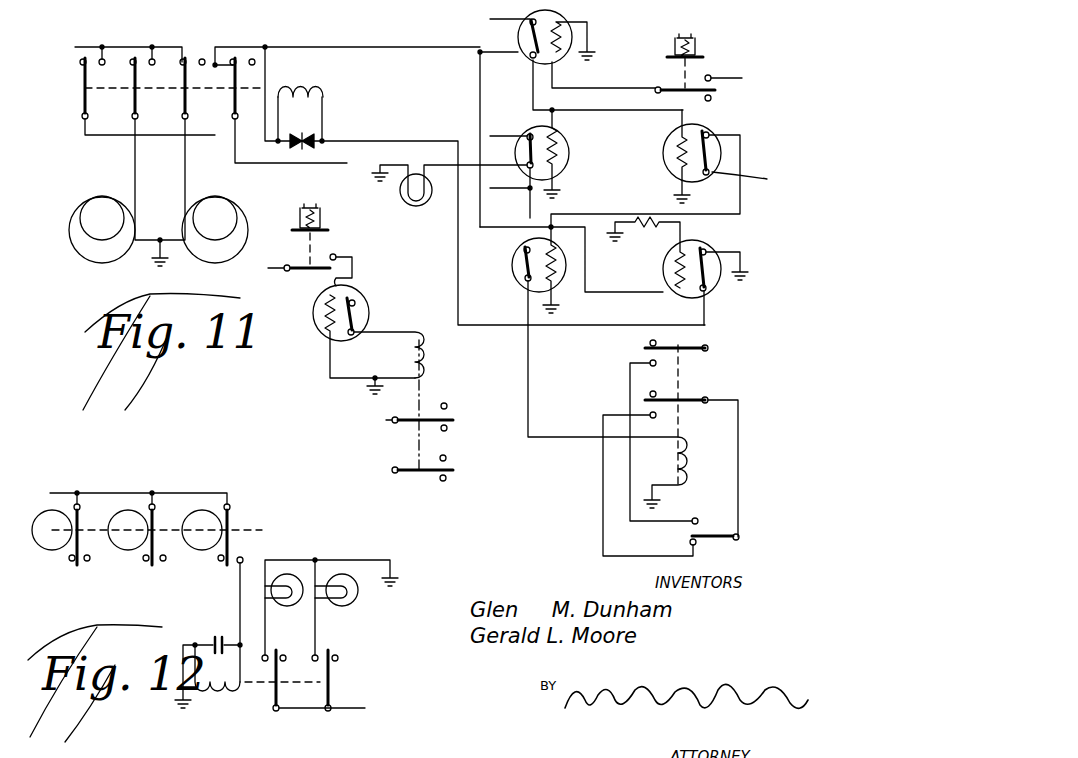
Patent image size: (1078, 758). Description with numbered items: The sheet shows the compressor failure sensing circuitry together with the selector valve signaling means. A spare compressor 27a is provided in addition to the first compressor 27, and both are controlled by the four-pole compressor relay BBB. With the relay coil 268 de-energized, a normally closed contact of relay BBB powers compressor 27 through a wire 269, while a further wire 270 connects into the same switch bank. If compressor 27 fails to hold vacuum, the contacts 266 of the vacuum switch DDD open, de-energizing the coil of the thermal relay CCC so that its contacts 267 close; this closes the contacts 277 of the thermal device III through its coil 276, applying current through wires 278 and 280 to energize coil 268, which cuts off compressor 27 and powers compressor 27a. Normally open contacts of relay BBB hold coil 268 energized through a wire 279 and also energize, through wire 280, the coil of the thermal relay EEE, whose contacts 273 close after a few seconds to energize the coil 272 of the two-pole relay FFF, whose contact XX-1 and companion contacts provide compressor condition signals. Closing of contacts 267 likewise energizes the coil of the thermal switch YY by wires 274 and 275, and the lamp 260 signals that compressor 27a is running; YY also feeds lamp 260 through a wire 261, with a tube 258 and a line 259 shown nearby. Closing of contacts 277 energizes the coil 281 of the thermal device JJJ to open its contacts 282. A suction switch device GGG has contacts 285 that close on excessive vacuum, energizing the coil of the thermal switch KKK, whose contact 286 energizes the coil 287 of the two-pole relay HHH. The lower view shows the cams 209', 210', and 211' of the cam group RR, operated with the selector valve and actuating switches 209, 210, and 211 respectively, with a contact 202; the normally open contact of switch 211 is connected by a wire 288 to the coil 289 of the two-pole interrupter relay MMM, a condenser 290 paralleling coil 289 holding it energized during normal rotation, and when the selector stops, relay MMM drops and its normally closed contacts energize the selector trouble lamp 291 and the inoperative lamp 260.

In FIG. 11, the compressor relay BBB is at (182, 44).
In FIG. 11, the wire 279 is at (83, 127).
In FIG. 11, the wire 269 is at (185, 178).
In FIG. 11, the line 270 is at (236, 164).
In FIG. 11, the relay coil 268 is at (296, 88).
In FIG. 11, the first compressor 27 is at (246, 220).
In FIG. 11, the spare compressor 27a is at (75, 252).
In FIG. 11, the suction switch device GGG is at (312, 208).
In FIG. 11, the contacts 285 is at (354, 262).
In FIG. 11, the thermal switch KKK is at (360, 293).
In FIG. 11, the relay contact 286 is at (358, 318).
In FIG. 11, the coil 287 is at (430, 358).
In FIG. 11, the two-pole relay HHH is at (463, 440).
In FIG. 11, the tube 258 is at (443, 174).
In FIG. 11, the inoperative indicator lamp 260 is at (408, 204).
In FIG. 12, the inoperative indicator lamp 260 is at (352, 600).
In FIG. 11, the thermal relay CCC is at (549, 13).
In FIG. 11, the contacts 267 is at (525, 40).
In FIG. 11, the wire 274 is at (533, 97).
In FIG. 11, the wire 280 is at (480, 114).
In FIG. 11, the wire 275 is at (556, 118).
In FIG. 11, the vacuum switch DDD is at (700, 40).
In FIG. 11, the contacts 266 is at (675, 83).
In FIG. 11, the thermal switch YY is at (570, 146).
In FIG. 11, the wire 261 is at (511, 201).
In FIG. 11, the line 259 is at (535, 213).
In FIG. 11, the thermal device III is at (711, 122).
In FIG. 11, the contacts 277 is at (712, 152).
In FIG. 11, the coil 276 is at (668, 152).
In FIG. 11, the wire 278 is at (742, 204).
In FIG. 11, the thermal relay EEE is at (522, 288).
In FIG. 11, the contacts 273 is at (522, 262).
In FIG. 11, the thermal device JJJ is at (716, 290).
In FIG. 11, the coil 281 is at (665, 268).
In FIG. 11, the contacts 282 is at (718, 270).
In FIG. 11, the two-pole relay FFF is at (748, 411).
In FIG. 11, the switch contact XX-1 is at (716, 559).
In FIG. 11, the coil 272 is at (686, 460).
In FIG. 12, the switch bank RR is at (139, 492).
In FIG. 12, the cam 209' is at (52, 496).
In FIG. 12, the cam 210' is at (112, 506).
In FIG. 12, the cam 211' is at (202, 504).
In FIG. 12, the cam switch 209 is at (59, 549).
In FIG. 12, the switch 210 is at (135, 549).
In FIG. 12, the switch 211 is at (205, 548).
In FIG. 12, the contact 202 is at (247, 534).
In FIG. 12, the wire 288 is at (238, 607).
In FIG. 12, the condenser 290 is at (216, 636).
In FIG. 12, the coil 289 is at (221, 692).
In FIG. 12, the selector trouble lamp 291 is at (292, 575).
In FIG. 12, the two-pole interrupter relay MMM is at (340, 672).